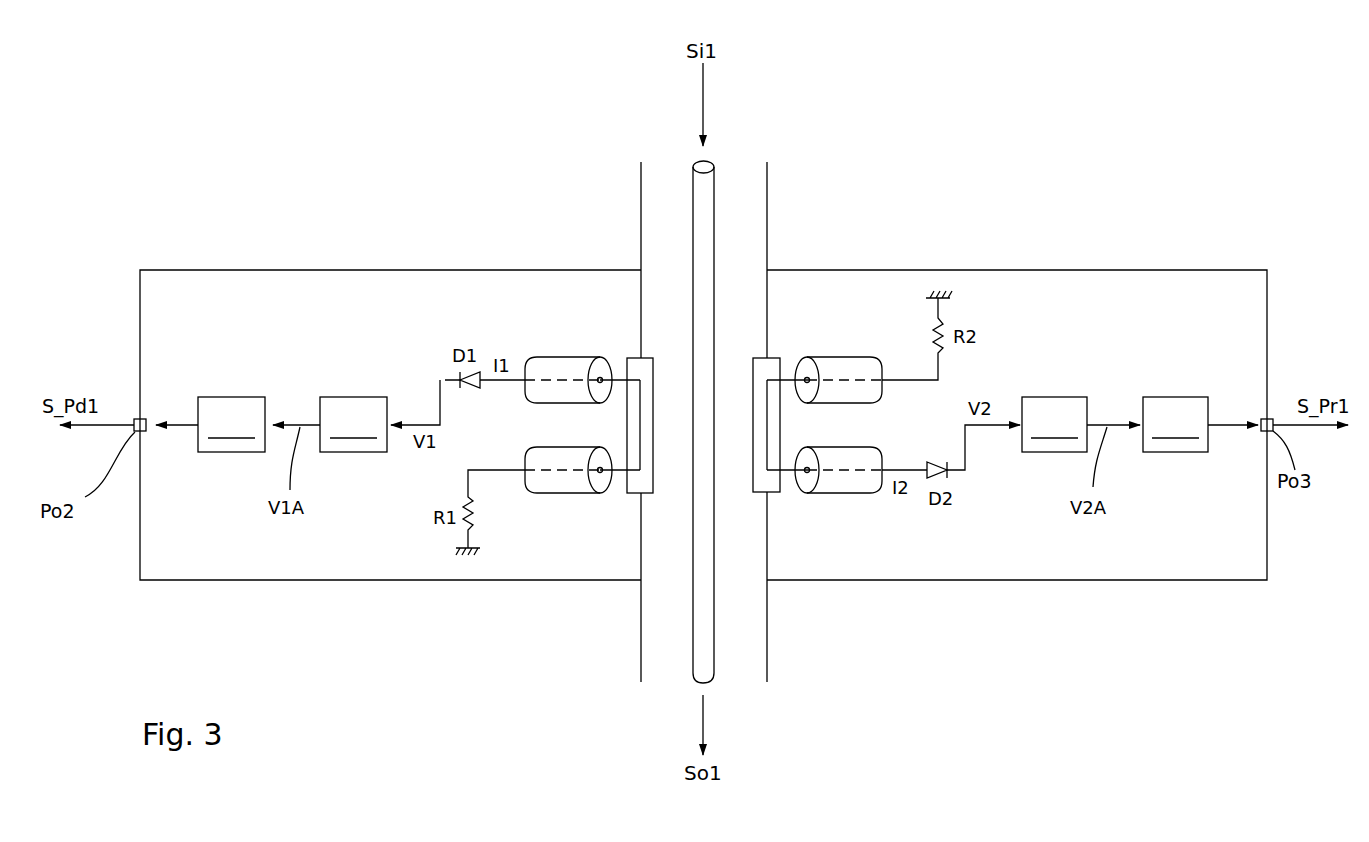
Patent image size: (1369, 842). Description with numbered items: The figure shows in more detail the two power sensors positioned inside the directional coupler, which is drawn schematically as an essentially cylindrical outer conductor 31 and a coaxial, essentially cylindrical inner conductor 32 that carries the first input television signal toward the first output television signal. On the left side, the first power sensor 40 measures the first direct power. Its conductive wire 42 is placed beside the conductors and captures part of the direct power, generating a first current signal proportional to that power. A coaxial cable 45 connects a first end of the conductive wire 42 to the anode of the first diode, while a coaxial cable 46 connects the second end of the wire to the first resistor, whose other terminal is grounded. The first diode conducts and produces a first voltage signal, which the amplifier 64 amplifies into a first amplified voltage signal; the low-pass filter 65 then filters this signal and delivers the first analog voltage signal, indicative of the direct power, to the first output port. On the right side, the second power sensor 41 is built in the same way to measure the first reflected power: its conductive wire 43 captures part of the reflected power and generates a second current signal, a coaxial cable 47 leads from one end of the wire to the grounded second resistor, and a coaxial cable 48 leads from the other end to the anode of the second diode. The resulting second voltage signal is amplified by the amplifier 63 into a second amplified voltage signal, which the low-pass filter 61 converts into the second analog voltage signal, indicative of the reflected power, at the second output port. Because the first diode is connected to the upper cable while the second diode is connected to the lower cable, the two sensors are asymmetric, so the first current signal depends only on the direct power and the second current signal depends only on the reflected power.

The outer conductor 31 is at (767, 200).
The inner conductor 32 is at (703, 205).
The first power sensor 40 is at (391, 270).
The second power sensor 41 is at (980, 270).
The conductive wire 42 is at (640, 425).
The conductive wire 43 is at (767, 425).
The coaxial cable 45 is at (560, 372).
The coaxial cable 46 is at (560, 480).
The coaxial cable 47 is at (842, 367).
The coaxial cable 48 is at (845, 480).
The low-pass filter 61 is at (1182, 397).
The amplifier 63 is at (1060, 397).
The amplifier 64 is at (357, 397).
The low-pass filter 65 is at (235, 397).